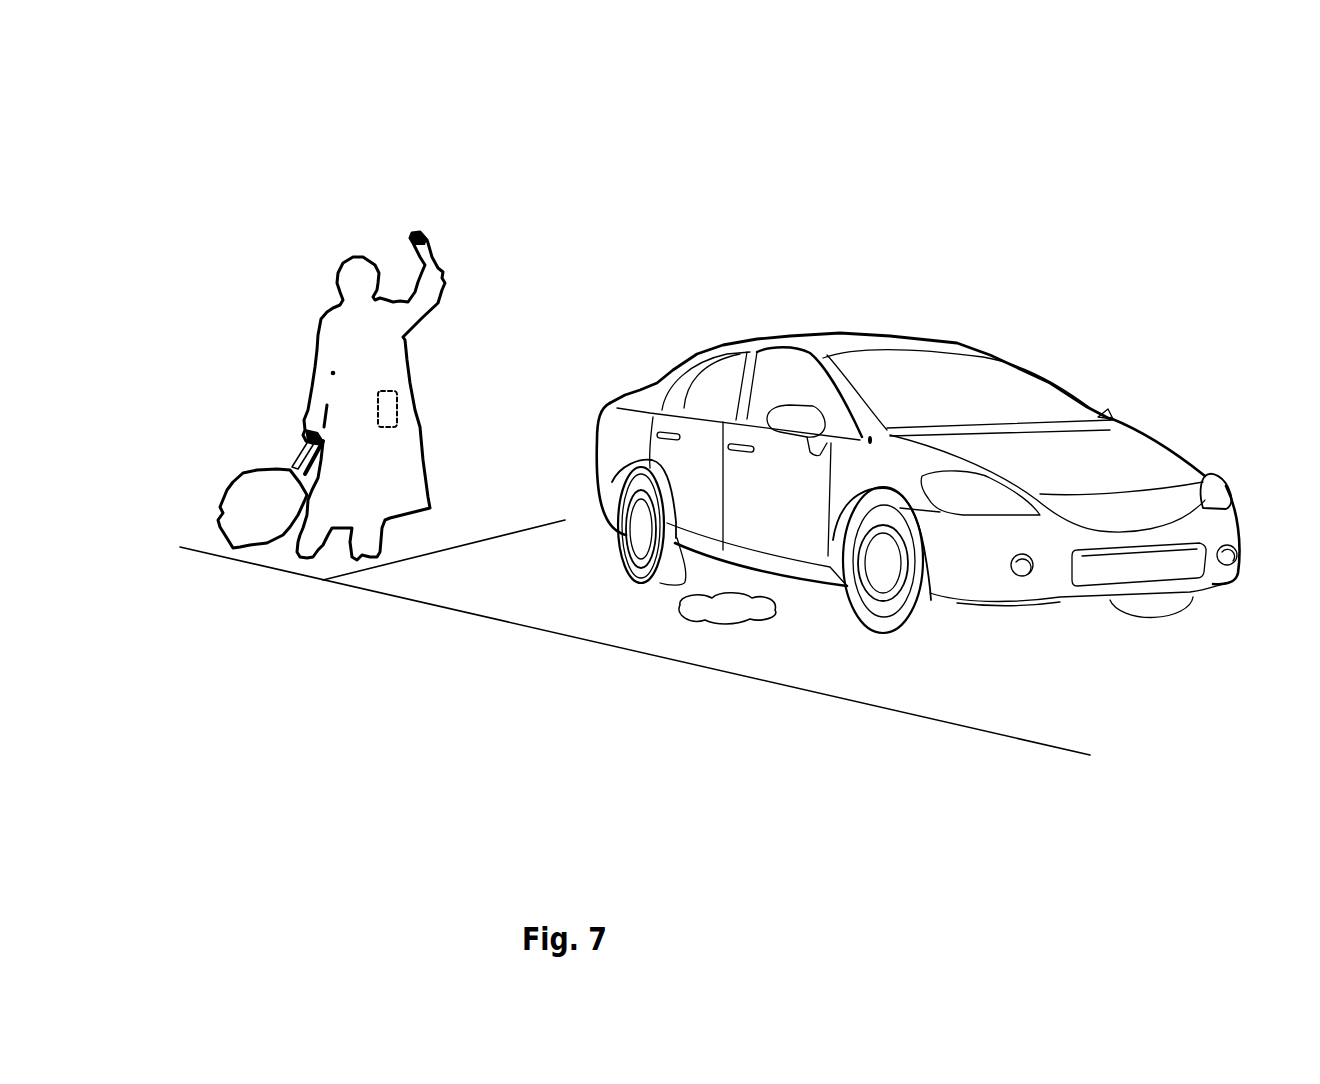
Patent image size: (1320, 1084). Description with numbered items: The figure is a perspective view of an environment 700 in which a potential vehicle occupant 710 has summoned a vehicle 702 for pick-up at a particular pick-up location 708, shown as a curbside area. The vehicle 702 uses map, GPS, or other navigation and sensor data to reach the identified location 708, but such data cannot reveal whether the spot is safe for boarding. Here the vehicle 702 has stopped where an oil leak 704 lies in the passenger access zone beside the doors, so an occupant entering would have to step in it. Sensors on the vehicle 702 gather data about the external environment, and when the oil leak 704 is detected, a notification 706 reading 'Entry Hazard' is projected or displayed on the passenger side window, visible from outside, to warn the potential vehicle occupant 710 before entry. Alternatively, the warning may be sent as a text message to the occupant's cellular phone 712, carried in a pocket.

The environment 700 is at (214, 102).
The vehicle 702 is at (980, 406).
The oil leak 704 is at (745, 605).
The notification 706 is at (790, 363).
The pick-up location 708 is at (511, 569).
The potential vehicle occupant 710 is at (380, 351).
The cellular phone 712 is at (397, 407).